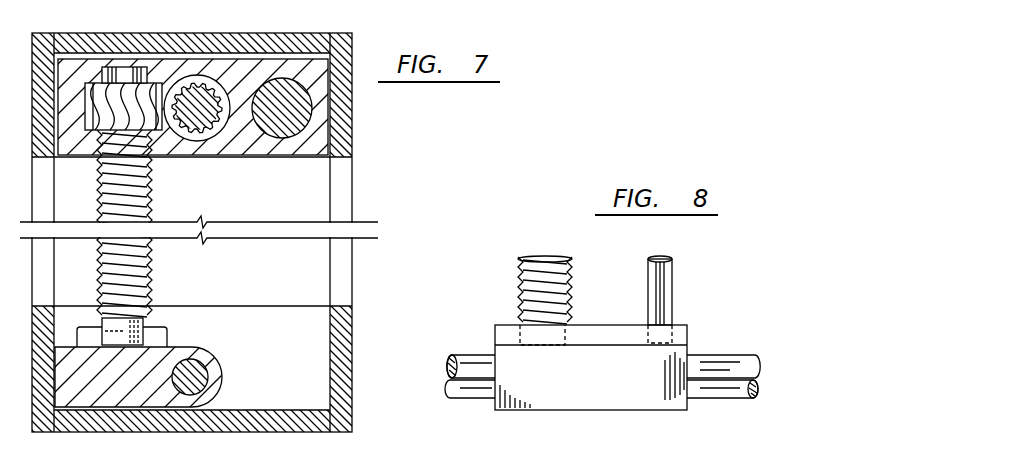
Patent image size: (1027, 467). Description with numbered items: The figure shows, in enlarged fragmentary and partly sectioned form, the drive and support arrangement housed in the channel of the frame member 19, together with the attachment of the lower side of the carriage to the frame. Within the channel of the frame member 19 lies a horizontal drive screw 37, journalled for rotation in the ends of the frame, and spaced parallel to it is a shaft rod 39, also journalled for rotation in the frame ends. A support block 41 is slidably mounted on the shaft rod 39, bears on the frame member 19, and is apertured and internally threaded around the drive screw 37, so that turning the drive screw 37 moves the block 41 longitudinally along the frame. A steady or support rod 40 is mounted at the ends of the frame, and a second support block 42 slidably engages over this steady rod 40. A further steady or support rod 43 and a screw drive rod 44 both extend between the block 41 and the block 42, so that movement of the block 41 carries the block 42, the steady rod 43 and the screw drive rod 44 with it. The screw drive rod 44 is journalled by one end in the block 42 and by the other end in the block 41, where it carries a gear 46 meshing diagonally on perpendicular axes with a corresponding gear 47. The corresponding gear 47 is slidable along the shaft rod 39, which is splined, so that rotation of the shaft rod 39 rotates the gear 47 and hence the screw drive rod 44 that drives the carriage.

In FIG. 7, the frame member 19 is at (87, 40).
In FIG. 7, the horizontal drive screw 37 is at (292, 126).
In FIG. 7, the shaft rod 39 is at (205, 132).
In FIG. 7, the steady or support rod 40 is at (212, 376).
In FIG. 8, the steady or support rod 40 is at (747, 397).
In FIG. 7, the support block 41 is at (315, 150).
In FIG. 7, the support block 42 is at (221, 348).
In FIG. 8, the support block 42 is at (641, 409).
In FIG. 8, the steady or support rod 43 is at (648, 295).
In FIG. 7, the screw drive rod 44 is at (152, 268).
In FIG. 8, the screw drive rod 44 is at (517, 287).
In FIG. 7, the gear 46 is at (78, 132).
In FIG. 7, the corresponding gear 47 is at (189, 137).